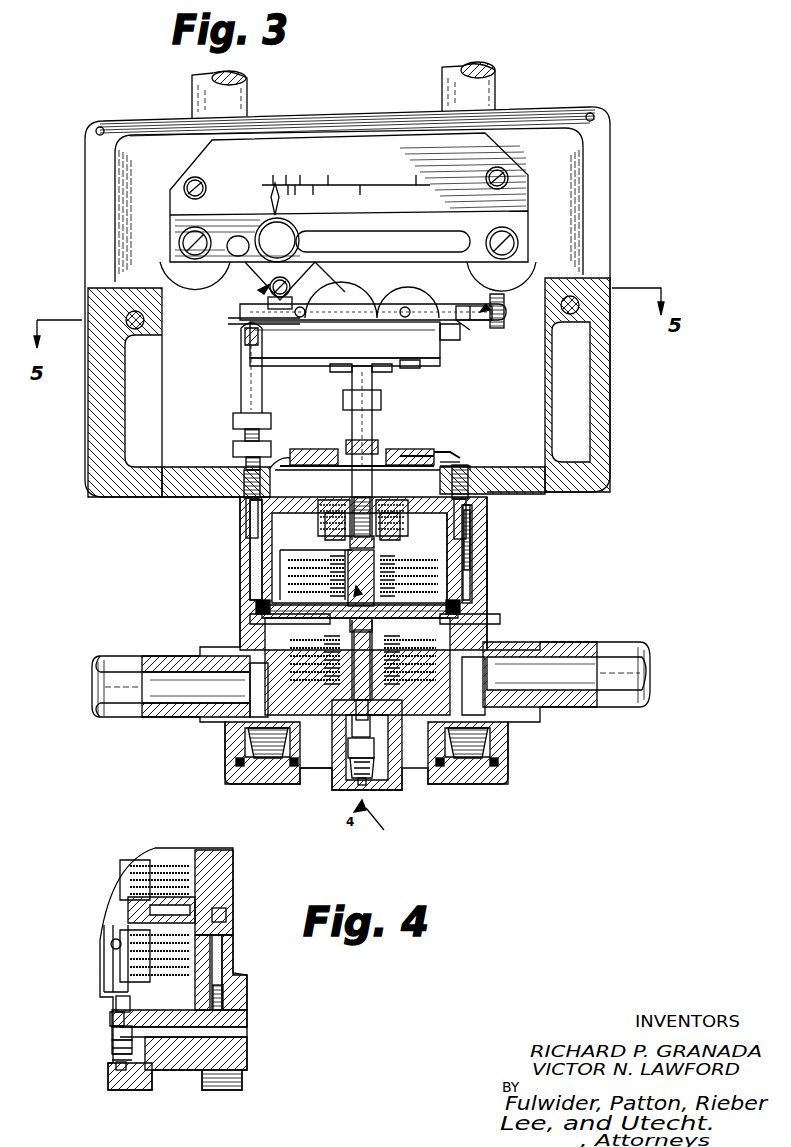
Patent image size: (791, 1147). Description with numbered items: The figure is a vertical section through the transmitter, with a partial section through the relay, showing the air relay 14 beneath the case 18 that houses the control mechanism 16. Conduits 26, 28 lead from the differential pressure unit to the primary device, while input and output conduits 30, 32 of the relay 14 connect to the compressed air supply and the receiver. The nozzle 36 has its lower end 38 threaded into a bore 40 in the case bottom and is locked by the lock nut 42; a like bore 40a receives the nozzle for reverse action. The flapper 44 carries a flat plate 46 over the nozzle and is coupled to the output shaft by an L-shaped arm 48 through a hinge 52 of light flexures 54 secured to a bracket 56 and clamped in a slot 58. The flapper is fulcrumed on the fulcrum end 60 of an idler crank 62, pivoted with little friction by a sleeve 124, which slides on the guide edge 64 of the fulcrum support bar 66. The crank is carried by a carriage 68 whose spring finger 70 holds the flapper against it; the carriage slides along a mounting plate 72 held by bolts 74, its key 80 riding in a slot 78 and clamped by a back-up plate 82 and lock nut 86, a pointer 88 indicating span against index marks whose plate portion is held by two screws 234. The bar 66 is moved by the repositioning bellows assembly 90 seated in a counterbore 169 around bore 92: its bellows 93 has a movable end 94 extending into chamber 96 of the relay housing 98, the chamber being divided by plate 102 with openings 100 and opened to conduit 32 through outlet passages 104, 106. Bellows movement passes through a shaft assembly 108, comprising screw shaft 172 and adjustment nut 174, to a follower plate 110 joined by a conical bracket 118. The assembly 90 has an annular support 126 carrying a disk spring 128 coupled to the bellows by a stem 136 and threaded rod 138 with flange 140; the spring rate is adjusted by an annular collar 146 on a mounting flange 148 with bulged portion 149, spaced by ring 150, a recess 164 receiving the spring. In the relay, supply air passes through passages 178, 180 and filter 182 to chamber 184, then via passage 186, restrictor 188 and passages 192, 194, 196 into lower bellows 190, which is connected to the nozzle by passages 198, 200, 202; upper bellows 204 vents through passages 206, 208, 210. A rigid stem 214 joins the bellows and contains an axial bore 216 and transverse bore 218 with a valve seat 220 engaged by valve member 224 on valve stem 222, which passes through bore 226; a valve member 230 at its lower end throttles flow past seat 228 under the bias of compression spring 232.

In FIG. 3, the air relay 14 is at (504, 522).
In FIG. 4, the air relay 14 is at (244, 866).
In FIG. 3, the control mechanism 16 is at (168, 290).
In FIG. 3, the case 18 is at (612, 210).
In FIG. 3, the conduit 26 is at (248, 100).
In FIG. 3, the conduit 28 is at (494, 100).
In FIG. 3, the input conduit 30 is at (124, 714).
In FIG. 3, the output conduit 32 is at (612, 646).
In FIG. 3, the nozzle 36 is at (238, 390).
In FIG. 3, the lower end 38 is at (248, 520).
In FIG. 3, the threaded bore 40 is at (248, 500).
In FIG. 3, the like bore 40a is at (500, 466).
In FIG. 3, the lock nut 42 is at (234, 452).
In FIG. 3, the flapper 44 is at (408, 306).
In FIG. 3, the flat plate 46 is at (238, 318).
In FIG. 3, the L-shaped arm 48 is at (506, 308).
In FIG. 3, the hinge 52 is at (496, 292).
In FIG. 3, the light flexures 54 is at (490, 318).
In FIG. 3, the bracket 56 is at (486, 304).
In FIG. 3, the slot 58 is at (500, 314).
In FIG. 3, the fulcrum end 60 is at (256, 344).
In FIG. 3, the idler crank 62 is at (292, 300).
In FIG. 3, the guide edge 64 is at (440, 330).
In FIG. 3, the fulcrum support bar 66 is at (440, 352).
In FIG. 3, the carriage 68 is at (258, 290).
In FIG. 3, the spring finger 70 is at (272, 298).
In FIG. 3, the mounting plate 72 is at (482, 158).
In FIG. 3, the bolts 74 is at (516, 232).
In FIG. 3, the horizontal slot 78 is at (376, 230).
In FIG. 3, the key 80 is at (248, 240).
In FIG. 3, the back-up plate 82 is at (256, 284).
In FIG. 3, the lock nut 86 is at (266, 230).
In FIG. 3, the pointer 88 is at (272, 196).
In FIG. 3, the repositioning bellows assembly 90 is at (340, 452).
In FIG. 3, the bore 92 is at (412, 520).
In FIG. 3, the bellows 93 is at (318, 530).
In FIG. 3, the movable end 94 is at (332, 527).
In FIG. 3, the chamber 96 is at (470, 542).
In FIG. 3, the relay housing 98 is at (490, 562).
In FIG. 4, the relay housing 98 is at (236, 882).
In FIG. 3, the openings 100 is at (470, 622).
In FIG. 3, the divider plate 102 is at (258, 608).
In FIG. 3, the outlet passage 104 is at (450, 788).
In FIG. 3, the outlet passage 106 is at (478, 670).
In FIG. 3, the shaft assembly 108 is at (376, 410).
In FIG. 3, the follower plate 110 is at (410, 364).
In FIG. 3, the conically shaped bracket 118 is at (348, 370).
In FIG. 3, the sleeve 124 is at (362, 292).
In FIG. 3, the annular support 126 is at (470, 466).
In FIG. 3, the disk spring 128 is at (450, 452).
In FIG. 3, the stem 136 is at (362, 528).
In FIG. 3, the threaded rod 138 is at (378, 446).
In FIG. 3, the flange 140 is at (352, 446).
In FIG. 3, the annular collar 146 is at (420, 446).
In FIG. 3, the mounting flange 148 is at (456, 462).
In FIG. 3, the central bulged portion 149 is at (420, 456).
In FIG. 3, the spacer ring 150 is at (252, 464).
In FIG. 3, the annular recess 164 is at (436, 514).
In FIG. 3, the counterbore 169 is at (300, 436).
In FIG. 3, the upper screw shaft 172 is at (366, 368).
In FIG. 3, the adjustment nut 174 is at (344, 398).
In FIG. 3, the passage 178 is at (248, 676).
In FIG. 3, the passage 180 is at (258, 788).
In FIG. 3, the removable filter 182 is at (240, 752).
In FIG. 3, the chamber 184 is at (352, 770).
In FIG. 4, the chamber 184 is at (120, 1034).
In FIG. 4, the radially extending passage 186 is at (174, 1040).
In FIG. 4, the restrictor 188 is at (236, 1004).
In FIG. 3, the lower dual bellows 190 is at (404, 682).
In FIG. 4, the lower dual bellows 190 is at (182, 982).
In FIG. 4, the passage 192 is at (236, 964).
In FIG. 4, the passage 194 is at (228, 918).
In FIG. 4, the passage 196 is at (116, 924).
In FIG. 3, the passage 198 is at (324, 682).
In FIG. 3, the passage 200 is at (270, 620).
In FIG. 3, the passage 202 is at (244, 548).
In FIG. 3, the upper dual bellows 204 is at (330, 572).
In FIG. 4, the upper dual bellows 204 is at (184, 864).
In FIG. 3, the passage 206 is at (382, 618).
In FIG. 3, the passage 208 is at (470, 602).
In FIG. 3, the passage 210 is at (478, 560).
In FIG. 3, the rigid stem 214 is at (326, 560).
In FIG. 4, the rigid stem 214 is at (108, 970).
In FIG. 3, the axial bore 216 is at (394, 690).
In FIG. 3, the transverse bore 218 is at (358, 604).
In FIG. 4, the transverse bore 218 is at (110, 944).
In FIG. 3, the valve seat 220 is at (356, 704).
In FIG. 3, the valve stem 222 is at (436, 772).
In FIG. 4, the valve stem 222 is at (116, 1005).
In FIG. 3, the valve member 224 is at (300, 780).
In FIG. 3, the bore 226 is at (362, 782).
In FIG. 4, the bore 226 is at (116, 1018).
In FIG. 3, the valve seat 228 is at (356, 765).
In FIG. 4, the valve seat 228 is at (118, 1030).
In FIG. 3, the valve member 230 is at (366, 790).
In FIG. 4, the valve member 230 is at (118, 1052).
In FIG. 3, the compression spring 232 is at (372, 800).
In FIG. 4, the compression spring 232 is at (122, 1072).
In FIG. 3, the screws 234 is at (526, 180).